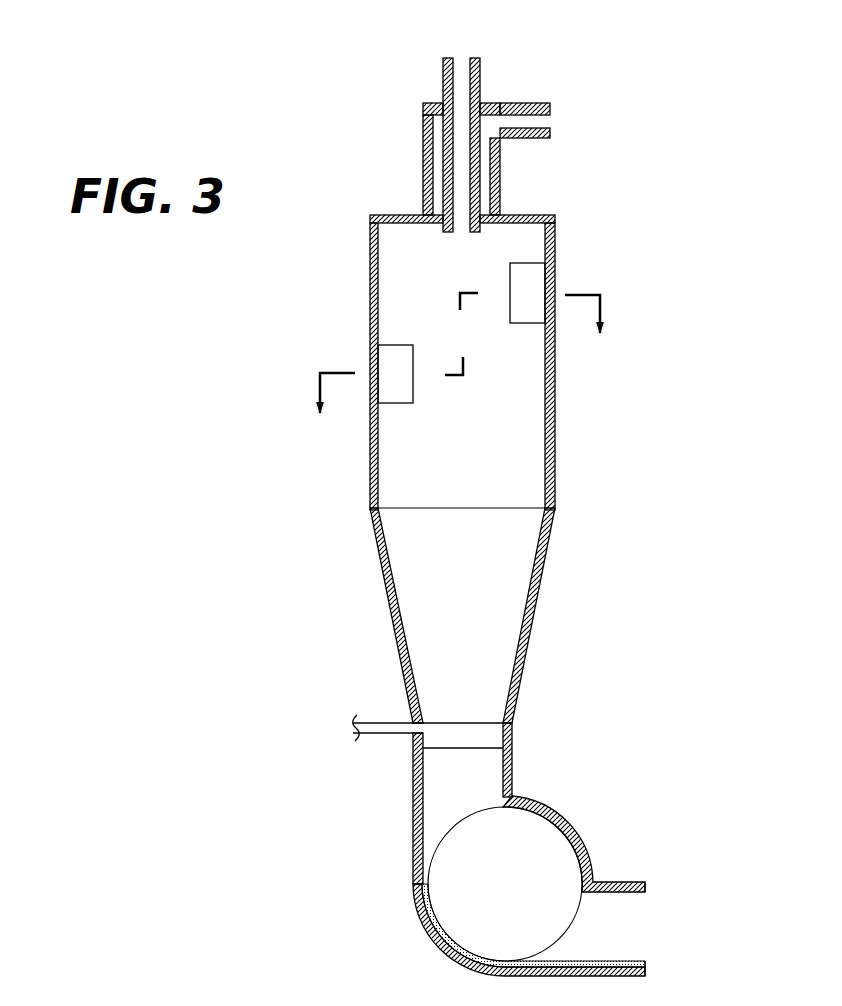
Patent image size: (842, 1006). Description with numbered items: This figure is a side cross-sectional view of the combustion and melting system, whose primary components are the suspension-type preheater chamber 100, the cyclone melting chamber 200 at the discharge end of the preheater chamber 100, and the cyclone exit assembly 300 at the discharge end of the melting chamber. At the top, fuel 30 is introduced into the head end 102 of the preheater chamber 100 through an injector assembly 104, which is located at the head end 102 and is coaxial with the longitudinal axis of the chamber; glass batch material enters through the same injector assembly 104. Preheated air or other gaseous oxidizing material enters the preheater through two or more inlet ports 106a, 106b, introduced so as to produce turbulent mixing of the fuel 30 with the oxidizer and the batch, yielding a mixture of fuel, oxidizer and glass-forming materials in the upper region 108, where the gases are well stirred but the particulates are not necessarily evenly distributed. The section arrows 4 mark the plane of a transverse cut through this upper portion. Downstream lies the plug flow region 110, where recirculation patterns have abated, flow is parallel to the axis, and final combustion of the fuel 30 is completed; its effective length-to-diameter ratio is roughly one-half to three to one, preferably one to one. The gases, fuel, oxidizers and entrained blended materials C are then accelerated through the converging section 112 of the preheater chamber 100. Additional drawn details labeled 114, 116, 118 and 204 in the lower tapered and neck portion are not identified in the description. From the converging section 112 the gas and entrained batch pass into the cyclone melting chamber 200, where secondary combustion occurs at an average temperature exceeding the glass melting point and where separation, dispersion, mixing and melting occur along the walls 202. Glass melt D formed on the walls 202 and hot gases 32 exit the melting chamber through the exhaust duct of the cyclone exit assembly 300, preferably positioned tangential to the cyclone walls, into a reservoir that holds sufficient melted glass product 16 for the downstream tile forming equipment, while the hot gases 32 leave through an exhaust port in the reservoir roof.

The entrained blended materials C is at (464, 52).
The injector assembly 104 is at (423, 143).
The fuel 30 is at (535, 120).
The head end 102 is at (523, 214).
The preheater chamber 100 is at (560, 432).
The inlet port 106a is at (392, 365).
The inlet port 106b is at (528, 282).
The upper region 108 is at (490, 277).
The plug flow region 110 is at (492, 456).
The converging section 112 is at (492, 594).
The conical section wall 118 is at (393, 617).
The inlet pipe 114 is at (378, 720).
The throat insert 116 is at (462, 777).
The neck conduit 204 is at (524, 767).
The cyclone melting chamber 200 is at (572, 832).
The walls 202 is at (557, 830).
The melted glass product 16 is at (464, 931).
The cyclone exit assembly 300 is at (639, 981).
The hot gases 32 is at (655, 912).
The glass melt D is at (655, 962).
The section line 4- 4 is at (453, 376).